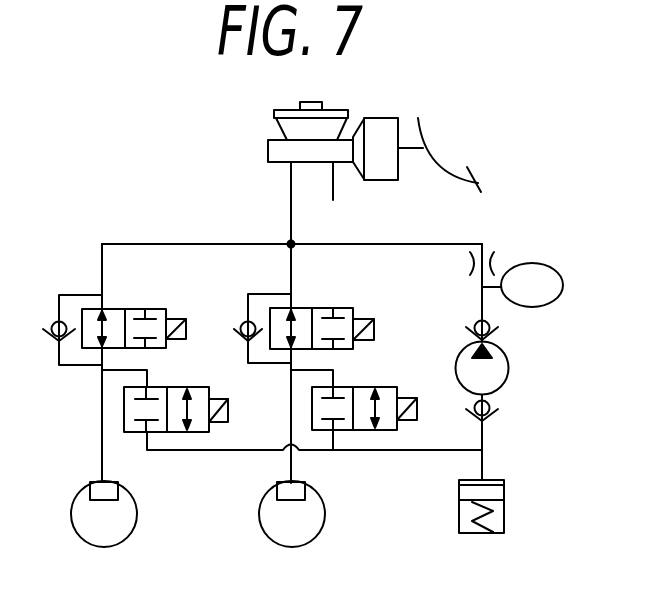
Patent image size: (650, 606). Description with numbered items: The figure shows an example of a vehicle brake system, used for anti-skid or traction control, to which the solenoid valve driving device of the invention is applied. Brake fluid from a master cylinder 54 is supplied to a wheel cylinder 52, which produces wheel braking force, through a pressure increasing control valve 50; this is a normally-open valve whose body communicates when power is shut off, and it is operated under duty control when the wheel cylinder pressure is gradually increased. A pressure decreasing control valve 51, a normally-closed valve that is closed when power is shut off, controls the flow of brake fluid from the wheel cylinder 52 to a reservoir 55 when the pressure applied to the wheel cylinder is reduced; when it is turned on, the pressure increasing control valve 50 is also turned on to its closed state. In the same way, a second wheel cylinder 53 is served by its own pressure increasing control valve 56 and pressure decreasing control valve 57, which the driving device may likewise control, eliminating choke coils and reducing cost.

The pressure increasing control valve 50 is at (113, 310).
The pressure decreasing control valve 51 is at (158, 392).
The wheel cylinder 52 is at (88, 486).
The wheel cylinder 53 is at (284, 484).
The master cylinder 54 is at (268, 148).
The reservoir 55 is at (504, 493).
The pressure increasing control valve 56 is at (345, 310).
The pressure decreasing control valve 57 is at (385, 390).